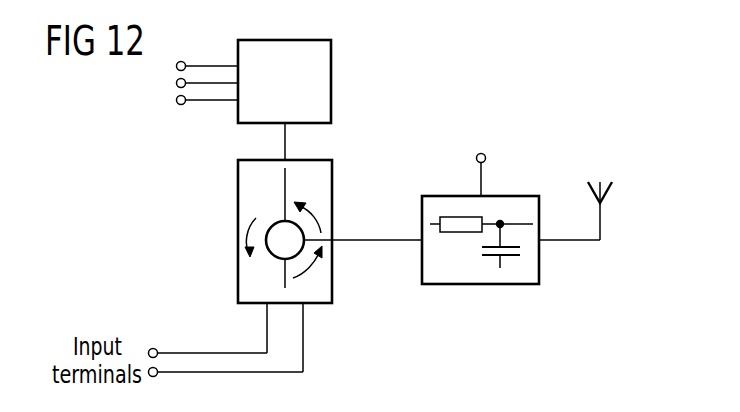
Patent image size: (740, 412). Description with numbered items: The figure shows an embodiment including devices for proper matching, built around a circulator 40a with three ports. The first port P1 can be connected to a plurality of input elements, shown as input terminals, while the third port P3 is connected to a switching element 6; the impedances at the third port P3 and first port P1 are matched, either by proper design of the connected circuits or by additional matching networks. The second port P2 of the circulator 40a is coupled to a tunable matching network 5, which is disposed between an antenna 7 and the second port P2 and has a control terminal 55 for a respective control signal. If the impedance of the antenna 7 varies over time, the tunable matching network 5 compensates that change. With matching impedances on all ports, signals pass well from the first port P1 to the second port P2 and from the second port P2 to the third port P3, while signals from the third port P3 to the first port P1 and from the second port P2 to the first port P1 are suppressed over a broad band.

The switching element 6 is at (333, 77).
The circulator 40a is at (280, 221).
The first port P1 is at (268, 277).
The second port P2 is at (350, 226).
The third port P3 is at (304, 183).
The tunable matching network 5 is at (516, 195).
The control terminal 55 is at (481, 153).
The antenna 7 is at (602, 182).